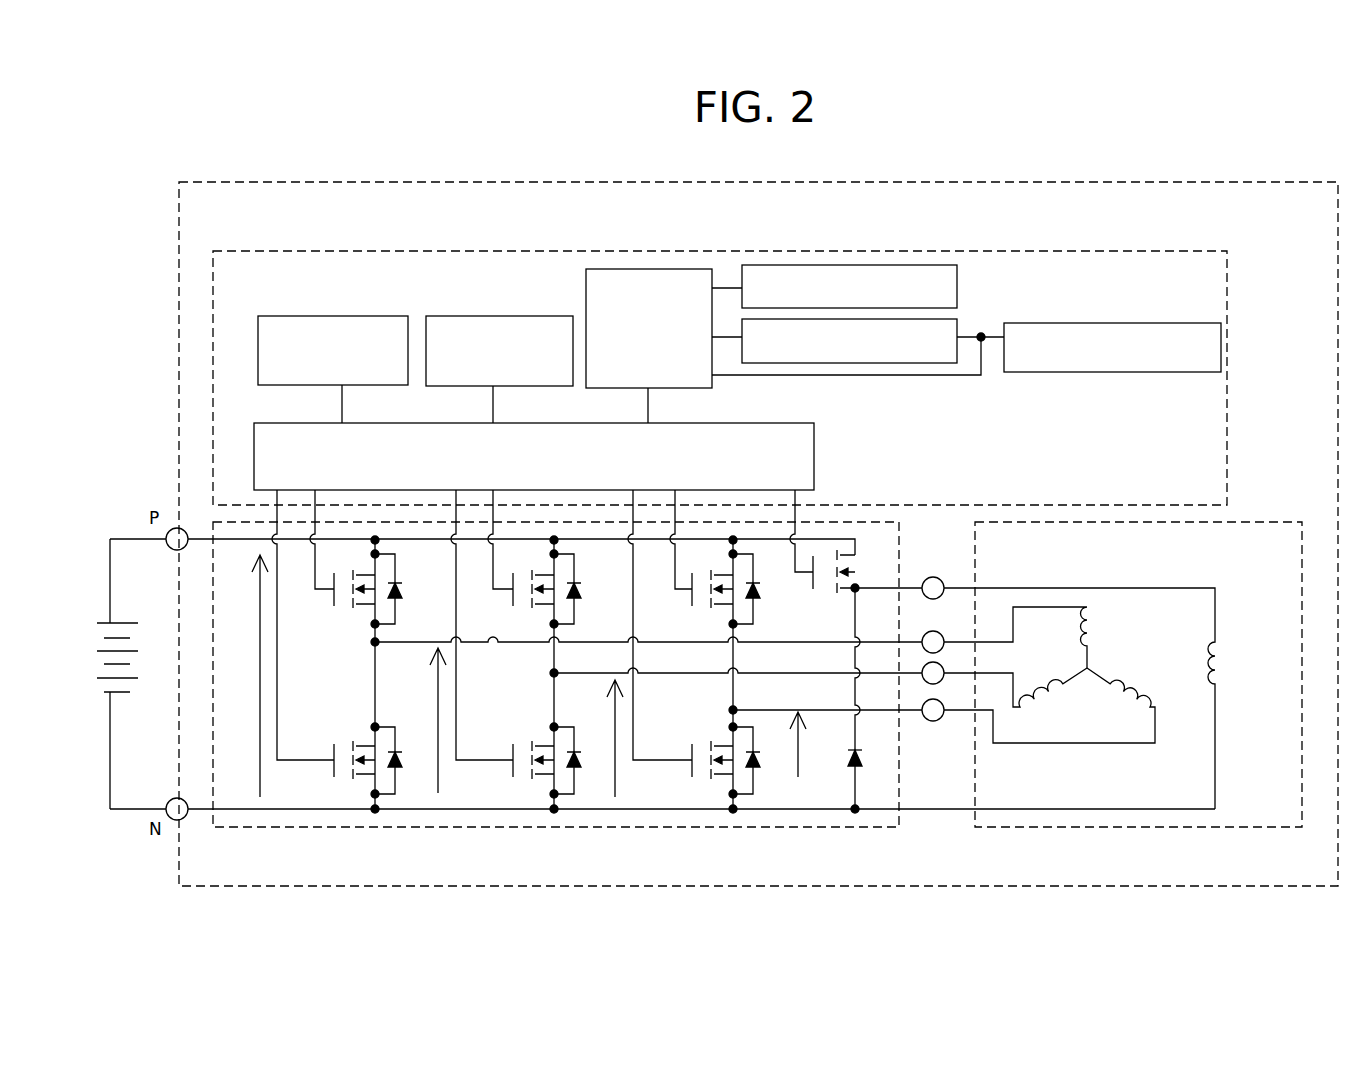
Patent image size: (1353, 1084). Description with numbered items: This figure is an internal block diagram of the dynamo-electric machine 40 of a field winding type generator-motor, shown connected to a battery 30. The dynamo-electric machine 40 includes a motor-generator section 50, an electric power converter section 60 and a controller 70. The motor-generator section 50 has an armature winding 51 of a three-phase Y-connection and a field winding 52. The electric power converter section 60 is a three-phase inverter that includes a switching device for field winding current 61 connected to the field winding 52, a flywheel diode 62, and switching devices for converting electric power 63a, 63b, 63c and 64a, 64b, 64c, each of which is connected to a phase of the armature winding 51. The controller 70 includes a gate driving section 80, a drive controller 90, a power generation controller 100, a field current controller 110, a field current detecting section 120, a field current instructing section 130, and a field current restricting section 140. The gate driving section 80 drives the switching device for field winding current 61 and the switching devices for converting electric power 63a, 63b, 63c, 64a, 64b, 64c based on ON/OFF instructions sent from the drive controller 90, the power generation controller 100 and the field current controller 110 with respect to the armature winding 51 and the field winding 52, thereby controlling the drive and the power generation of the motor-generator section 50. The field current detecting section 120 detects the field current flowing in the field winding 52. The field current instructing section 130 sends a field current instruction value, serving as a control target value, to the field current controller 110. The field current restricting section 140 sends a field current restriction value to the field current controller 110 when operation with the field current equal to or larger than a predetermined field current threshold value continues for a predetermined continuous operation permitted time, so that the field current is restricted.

The battery 30 is at (97, 642).
The dynamo-electric machine 40 is at (177, 358).
The motor-generator section 50 is at (1102, 828).
The armature winding 51 is at (1098, 632).
The field winding 52 is at (1225, 660).
The electric power converter section 60 is at (638, 828).
The switching device for field winding current 61 is at (830, 588).
The flywheel diode 62 is at (850, 757).
The switching device for converting electric power 63a is at (345, 607).
The switching device for converting electric power 63b is at (525, 607).
The switching device for converting electric power 63c is at (703, 607).
The switching device for converting electric power 64a is at (350, 748).
The switching device for converting electric power 64b is at (530, 748).
The switching device for converting electric power 64c is at (707, 748).
The controller 70 is at (862, 250).
The gate driving section 80 is at (815, 457).
The drive controller 90 is at (305, 316).
The power generation controller 100 is at (457, 316).
The field current controller 110 is at (713, 387).
The field current detecting section 120 is at (1107, 317).
The field current instructing section 130 is at (960, 288).
The field current restricting section 140 is at (958, 323).